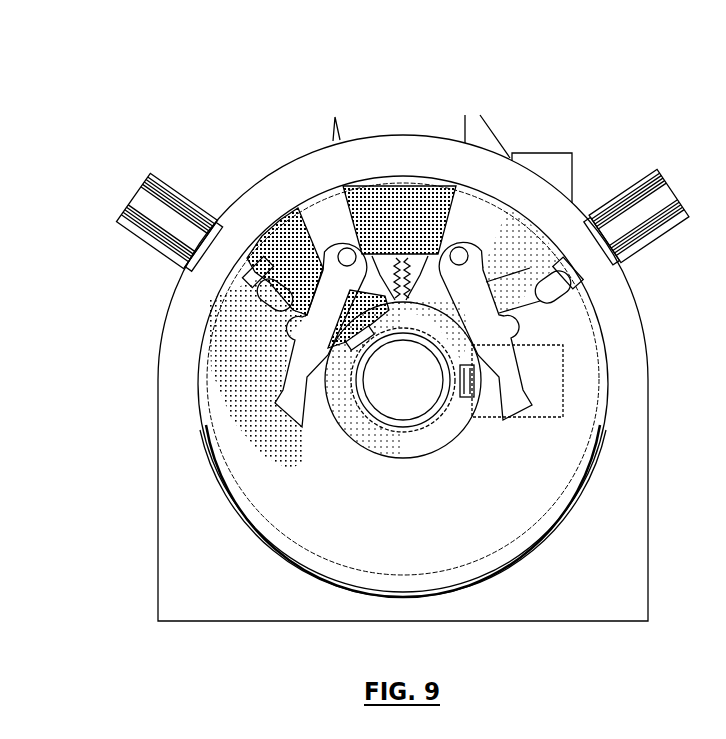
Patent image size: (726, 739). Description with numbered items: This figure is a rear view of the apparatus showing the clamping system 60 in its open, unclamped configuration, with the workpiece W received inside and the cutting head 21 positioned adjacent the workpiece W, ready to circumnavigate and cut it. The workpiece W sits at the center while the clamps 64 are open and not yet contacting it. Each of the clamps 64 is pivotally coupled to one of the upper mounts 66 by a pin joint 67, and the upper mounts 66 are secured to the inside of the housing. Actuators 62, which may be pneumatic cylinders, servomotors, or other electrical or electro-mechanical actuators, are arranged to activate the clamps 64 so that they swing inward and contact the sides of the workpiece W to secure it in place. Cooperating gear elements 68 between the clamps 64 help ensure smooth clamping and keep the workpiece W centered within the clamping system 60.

The clamping system 60 is at (192, 158).
The actuators 62 is at (153, 251).
The clamps 64 is at (300, 420).
The upper mounts 66 is at (320, 233).
The pin joints 67 is at (313, 250).
The cooperating gear elements 68 is at (428, 259).
The cutting head 21 is at (447, 378).
The workpiece W is at (417, 415).